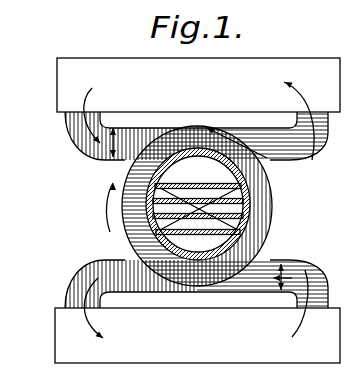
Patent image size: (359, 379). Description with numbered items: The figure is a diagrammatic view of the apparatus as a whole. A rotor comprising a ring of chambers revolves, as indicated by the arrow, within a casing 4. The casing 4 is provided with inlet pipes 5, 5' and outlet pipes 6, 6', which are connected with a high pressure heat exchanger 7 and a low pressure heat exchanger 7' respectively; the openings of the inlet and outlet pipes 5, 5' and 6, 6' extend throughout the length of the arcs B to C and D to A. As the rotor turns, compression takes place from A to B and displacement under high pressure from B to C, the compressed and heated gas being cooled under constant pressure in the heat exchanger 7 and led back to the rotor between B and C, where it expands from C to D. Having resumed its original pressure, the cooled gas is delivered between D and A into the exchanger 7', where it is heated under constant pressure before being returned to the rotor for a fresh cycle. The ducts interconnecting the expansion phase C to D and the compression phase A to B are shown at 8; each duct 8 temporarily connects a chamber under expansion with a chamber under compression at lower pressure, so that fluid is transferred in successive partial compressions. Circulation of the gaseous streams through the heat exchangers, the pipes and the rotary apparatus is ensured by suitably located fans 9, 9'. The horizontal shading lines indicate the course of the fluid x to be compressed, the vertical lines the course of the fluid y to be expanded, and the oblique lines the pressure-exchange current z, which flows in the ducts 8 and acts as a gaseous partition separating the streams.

The casing 4 is at (274, 207).
The inlet pipe 5 is at (110, 136).
The inlet pipe 5' is at (273, 284).
The outlet pipe 6 is at (274, 136).
The outlet pipe 6' is at (112, 284).
The high pressure heat exchanger 7 is at (191, 123).
The low pressure heat exchanger 7' is at (183, 316).
The connecting ducts 8 is at (245, 191).
The fan 9 is at (90, 157).
The fan 9' is at (304, 264).
The fluid to be compressed x is at (134, 243).
The fluid to be expanded y is at (262, 229).
The pressure-exchange current z is at (121, 232).